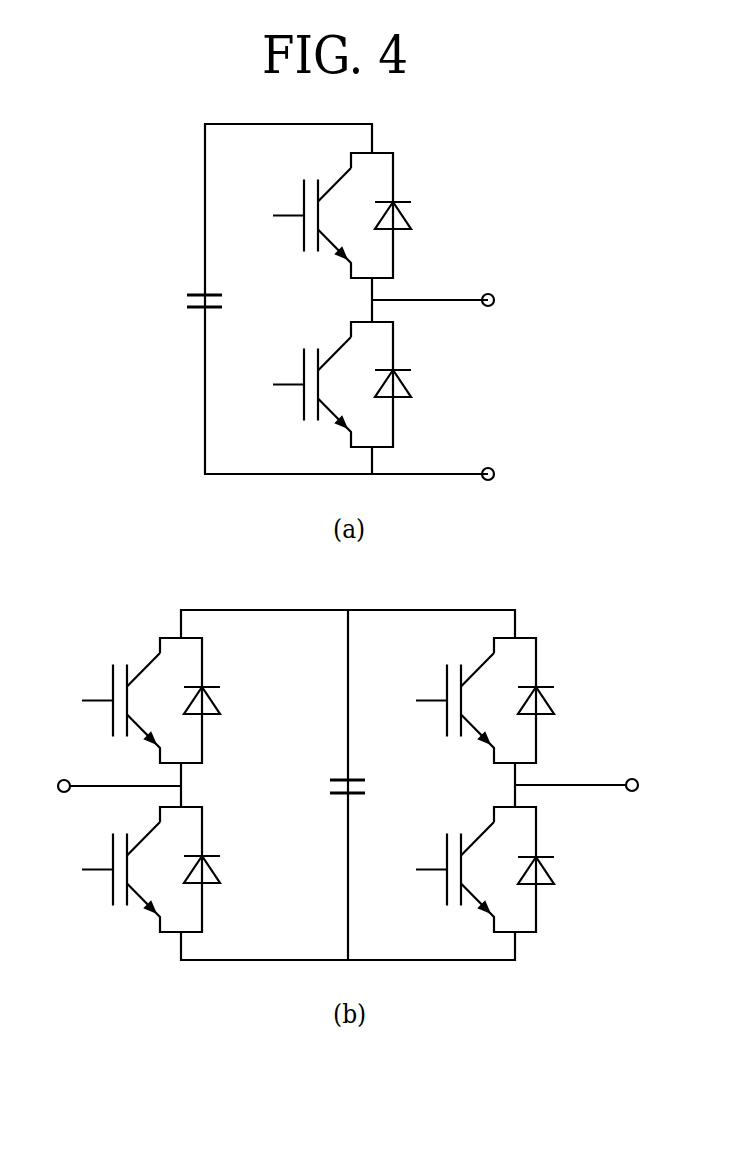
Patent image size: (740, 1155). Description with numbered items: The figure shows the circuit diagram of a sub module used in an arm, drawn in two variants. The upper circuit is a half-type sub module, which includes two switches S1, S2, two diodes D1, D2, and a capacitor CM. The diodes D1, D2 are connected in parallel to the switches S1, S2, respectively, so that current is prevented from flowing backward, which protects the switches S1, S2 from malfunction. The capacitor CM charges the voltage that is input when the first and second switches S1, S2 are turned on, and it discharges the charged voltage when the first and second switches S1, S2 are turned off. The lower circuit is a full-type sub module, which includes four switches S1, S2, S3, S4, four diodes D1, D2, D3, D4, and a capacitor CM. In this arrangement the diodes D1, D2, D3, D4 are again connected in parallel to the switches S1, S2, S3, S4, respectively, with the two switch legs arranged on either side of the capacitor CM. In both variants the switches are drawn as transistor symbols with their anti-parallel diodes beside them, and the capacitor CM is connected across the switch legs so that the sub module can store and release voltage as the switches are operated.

The first switch S1 is at (237, 458).
The second switch S2 is at (237, 627).
The third switch S3 is at (476, 700).
The fourth switch S4 is at (475, 869).
The first diode D1 is at (318, 459).
The second diode D2 is at (318, 625).
The third diode D3 is at (556, 701).
The fourth diode D4 is at (556, 868).
The capacitor CM is at (261, 544).